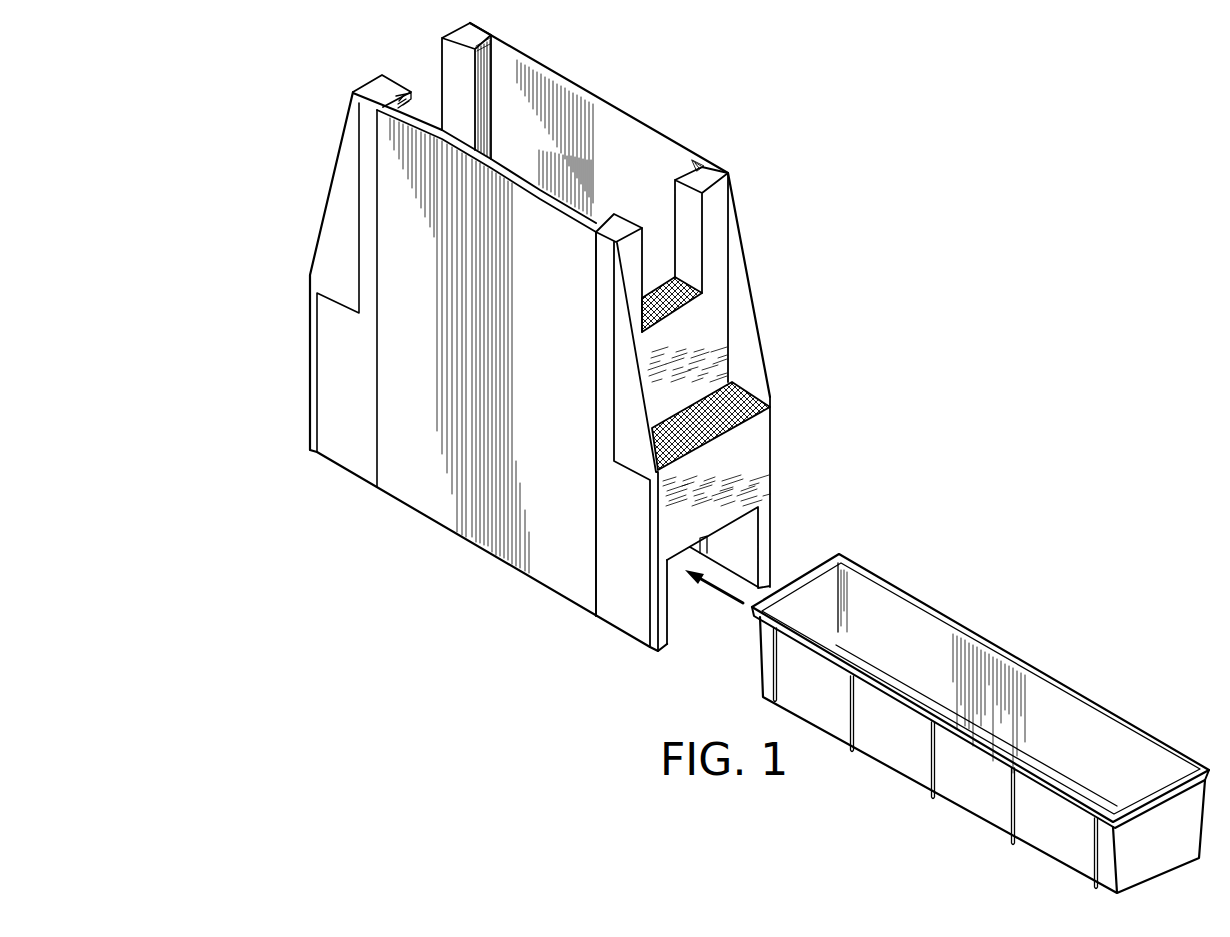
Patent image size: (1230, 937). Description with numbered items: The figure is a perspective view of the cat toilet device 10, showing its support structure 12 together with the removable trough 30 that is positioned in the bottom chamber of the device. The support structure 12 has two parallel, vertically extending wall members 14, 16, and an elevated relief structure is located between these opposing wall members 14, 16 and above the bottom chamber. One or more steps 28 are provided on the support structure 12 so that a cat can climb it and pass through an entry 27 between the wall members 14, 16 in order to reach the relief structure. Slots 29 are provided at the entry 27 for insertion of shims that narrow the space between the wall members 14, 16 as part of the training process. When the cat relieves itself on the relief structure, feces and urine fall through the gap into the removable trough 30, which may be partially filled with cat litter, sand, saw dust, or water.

The cat toilet device 10 is at (885, 258).
The support structure 12 is at (292, 365).
The wall member 14 is at (587, 90).
The wall member 16 is at (513, 190).
The entry 27 is at (657, 242).
The steps 28 is at (693, 302).
The slots 29 is at (473, 53).
The removable trough 30 is at (1001, 617).